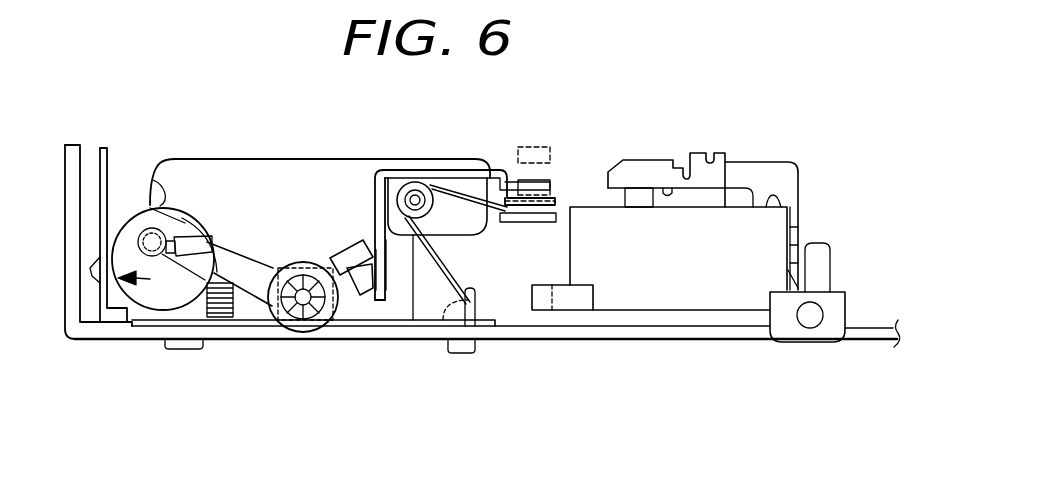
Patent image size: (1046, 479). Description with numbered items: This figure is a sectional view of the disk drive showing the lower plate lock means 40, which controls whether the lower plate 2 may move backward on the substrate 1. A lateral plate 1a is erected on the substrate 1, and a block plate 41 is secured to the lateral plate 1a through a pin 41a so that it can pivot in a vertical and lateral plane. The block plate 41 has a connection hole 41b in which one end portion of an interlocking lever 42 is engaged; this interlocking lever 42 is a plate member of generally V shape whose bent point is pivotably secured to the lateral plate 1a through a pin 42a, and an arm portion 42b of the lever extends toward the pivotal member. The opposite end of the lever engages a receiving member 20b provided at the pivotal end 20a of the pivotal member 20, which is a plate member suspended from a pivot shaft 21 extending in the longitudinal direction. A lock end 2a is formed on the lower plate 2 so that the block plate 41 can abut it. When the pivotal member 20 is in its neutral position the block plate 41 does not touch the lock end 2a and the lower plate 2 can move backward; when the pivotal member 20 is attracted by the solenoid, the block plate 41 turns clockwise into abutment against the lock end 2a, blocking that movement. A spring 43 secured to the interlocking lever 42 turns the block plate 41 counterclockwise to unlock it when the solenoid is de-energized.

The substrate 1 is at (533, 340).
The lateral plate 1a is at (273, 159).
The lower plate 2 is at (106, 327).
The lock end 2a is at (84, 195).
The pivotal member 20 is at (364, 176).
The pivotal end 20a is at (392, 283).
The receiving member 20b is at (356, 294).
The pivot shaft 21 is at (415, 182).
The lower plate lock means 40 is at (206, 188).
The block plate 41 is at (143, 296).
The pin 41a is at (140, 230).
The connection hole 41b is at (215, 216).
The interlocking lever 42 is at (252, 289).
The pin 42a is at (295, 318).
The arm portion 42b is at (347, 250).
The spring 43 is at (200, 286).